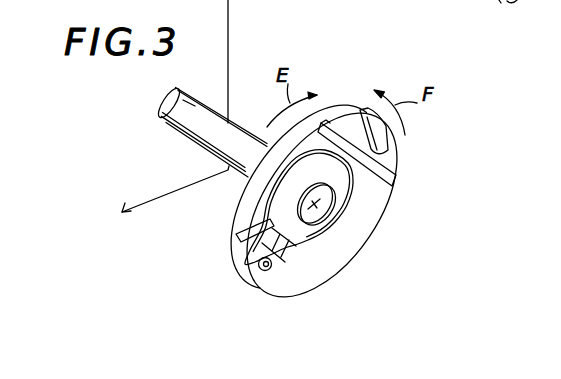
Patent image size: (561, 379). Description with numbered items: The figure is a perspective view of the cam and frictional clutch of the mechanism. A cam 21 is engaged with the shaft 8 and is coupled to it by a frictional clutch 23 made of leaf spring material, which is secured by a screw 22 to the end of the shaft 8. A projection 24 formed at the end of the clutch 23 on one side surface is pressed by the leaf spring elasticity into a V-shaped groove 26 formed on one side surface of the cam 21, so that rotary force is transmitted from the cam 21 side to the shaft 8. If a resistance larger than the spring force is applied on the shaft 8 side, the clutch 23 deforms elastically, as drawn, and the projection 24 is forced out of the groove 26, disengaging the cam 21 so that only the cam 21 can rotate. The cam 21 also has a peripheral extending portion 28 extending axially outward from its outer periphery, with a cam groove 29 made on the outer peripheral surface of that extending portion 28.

The shaft 8 is at (233, 128).
The cam 21 is at (370, 205).
The screw 22 is at (337, 202).
The frictional clutch 23 is at (313, 227).
The projection 24 is at (267, 271).
The V-shaped groove 26 is at (238, 242).
The peripheral extending portion 28 is at (388, 163).
The cam groove 29 is at (380, 144).